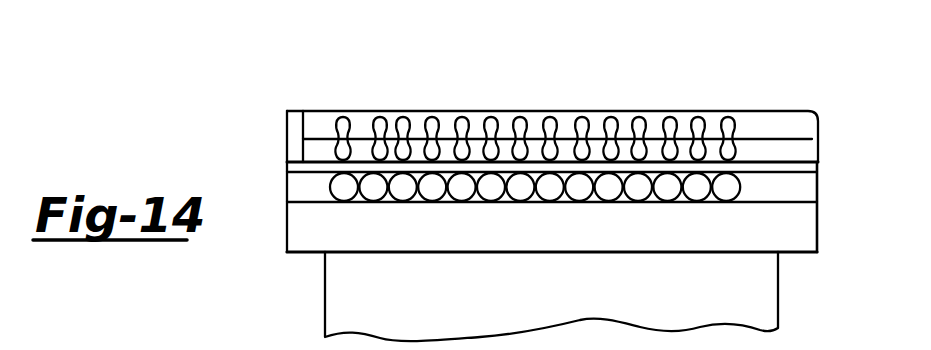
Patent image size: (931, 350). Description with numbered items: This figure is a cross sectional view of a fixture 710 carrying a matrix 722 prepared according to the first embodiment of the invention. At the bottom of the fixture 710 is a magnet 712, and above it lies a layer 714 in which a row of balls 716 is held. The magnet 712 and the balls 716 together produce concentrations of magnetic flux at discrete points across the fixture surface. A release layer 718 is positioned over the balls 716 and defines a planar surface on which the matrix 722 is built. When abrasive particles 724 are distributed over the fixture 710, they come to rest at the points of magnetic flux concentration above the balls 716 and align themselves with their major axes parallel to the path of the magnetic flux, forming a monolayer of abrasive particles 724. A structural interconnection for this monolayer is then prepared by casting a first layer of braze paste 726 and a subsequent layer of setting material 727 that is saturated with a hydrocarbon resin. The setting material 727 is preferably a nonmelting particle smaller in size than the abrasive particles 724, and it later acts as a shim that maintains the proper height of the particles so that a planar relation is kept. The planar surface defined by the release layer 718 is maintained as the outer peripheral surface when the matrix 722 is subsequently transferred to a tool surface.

The electrochemical cell assembly 710 is at (792, 313).
The magnet 712 is at (432, 305).
The lower layer 714 is at (410, 239).
The balls 716 is at (342, 187).
The release layer 718 is at (820, 172).
The matrix 722 is at (581, 106).
The abrasive particles 724 is at (347, 120).
The braze paste 726 is at (806, 151).
The setting material 727 is at (427, 118).